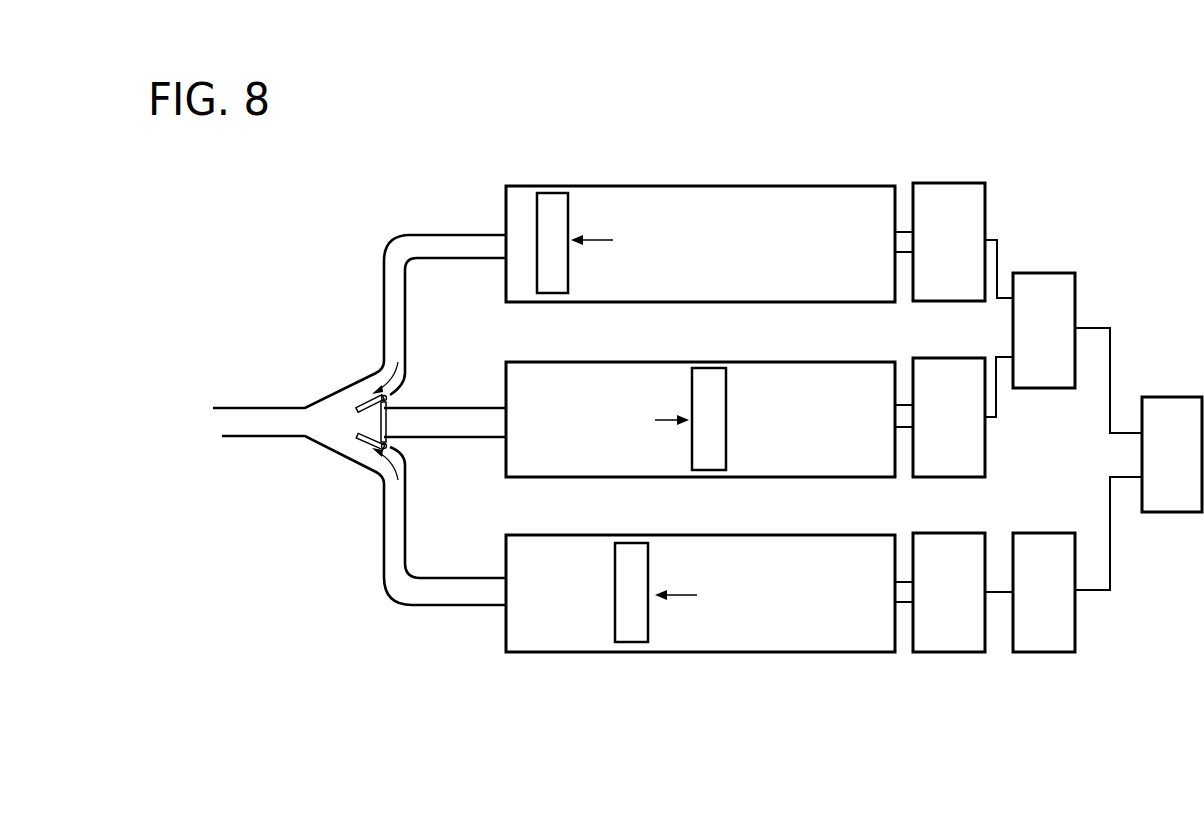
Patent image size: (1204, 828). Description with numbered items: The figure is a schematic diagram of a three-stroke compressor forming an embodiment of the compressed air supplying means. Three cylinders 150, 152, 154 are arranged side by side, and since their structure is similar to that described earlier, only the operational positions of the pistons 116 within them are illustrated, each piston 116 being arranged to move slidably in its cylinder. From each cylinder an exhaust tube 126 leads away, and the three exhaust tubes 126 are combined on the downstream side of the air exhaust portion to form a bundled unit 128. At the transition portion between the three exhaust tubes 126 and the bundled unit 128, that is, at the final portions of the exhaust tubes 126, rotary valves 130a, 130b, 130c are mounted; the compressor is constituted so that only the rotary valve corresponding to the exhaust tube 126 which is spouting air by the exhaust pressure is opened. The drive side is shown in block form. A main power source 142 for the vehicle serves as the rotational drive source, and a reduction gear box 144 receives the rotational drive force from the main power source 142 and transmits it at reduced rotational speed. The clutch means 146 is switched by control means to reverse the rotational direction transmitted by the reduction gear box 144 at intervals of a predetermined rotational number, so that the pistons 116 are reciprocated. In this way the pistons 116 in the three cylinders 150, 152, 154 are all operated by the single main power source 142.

The piston 116 is at (537, 198).
The exhaust tube 126 is at (383, 283).
The bundled unit 128 is at (237, 438).
The rotary valve 130a is at (357, 409).
The rotary valve 130b is at (381, 422).
The rotary valve 130c is at (357, 449).
The main power source 142 is at (1168, 397).
The reduction gear box 144 is at (1051, 273).
The clutch means 146 is at (961, 183).
The cylinder 150 is at (762, 186).
The cylinder 152 is at (717, 362).
The cylinder 154 is at (704, 514).